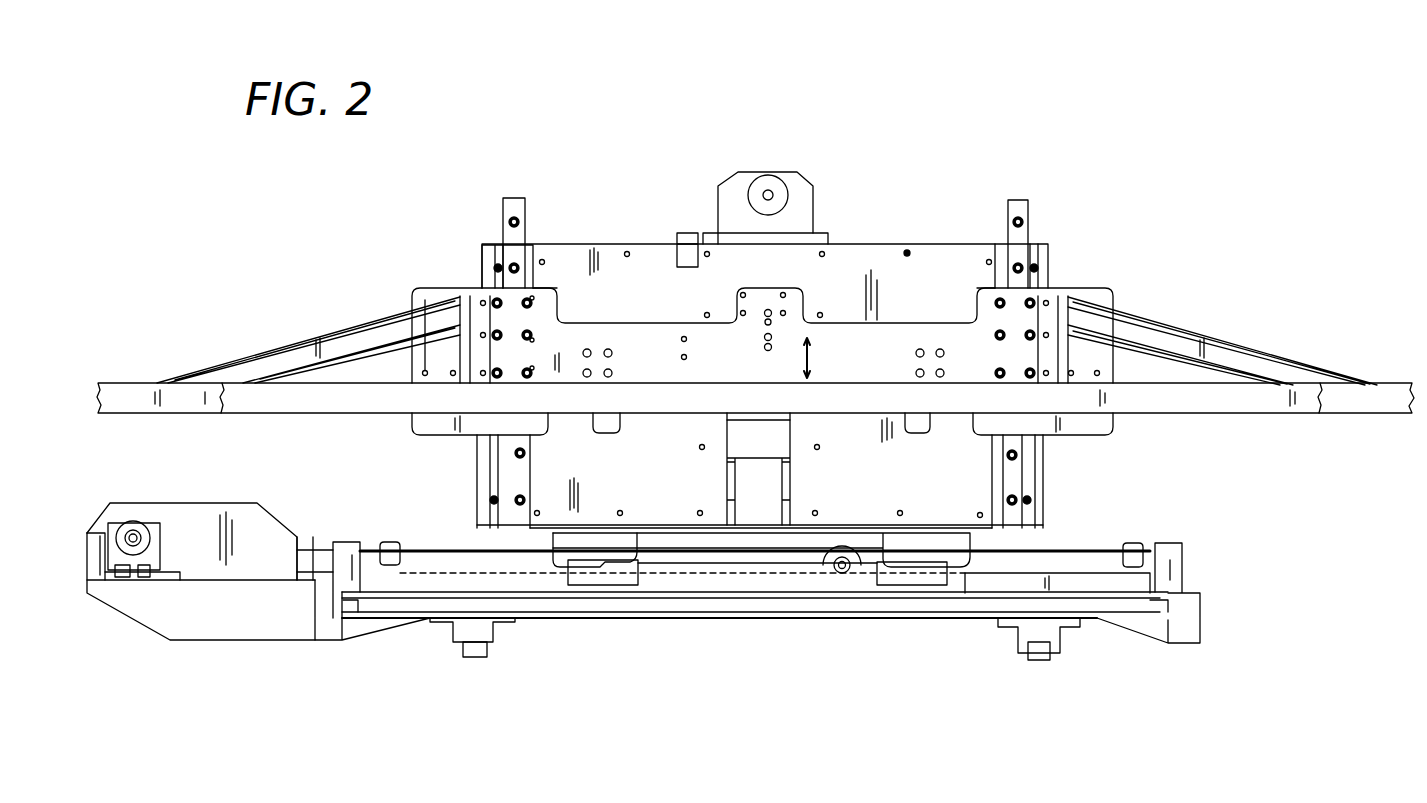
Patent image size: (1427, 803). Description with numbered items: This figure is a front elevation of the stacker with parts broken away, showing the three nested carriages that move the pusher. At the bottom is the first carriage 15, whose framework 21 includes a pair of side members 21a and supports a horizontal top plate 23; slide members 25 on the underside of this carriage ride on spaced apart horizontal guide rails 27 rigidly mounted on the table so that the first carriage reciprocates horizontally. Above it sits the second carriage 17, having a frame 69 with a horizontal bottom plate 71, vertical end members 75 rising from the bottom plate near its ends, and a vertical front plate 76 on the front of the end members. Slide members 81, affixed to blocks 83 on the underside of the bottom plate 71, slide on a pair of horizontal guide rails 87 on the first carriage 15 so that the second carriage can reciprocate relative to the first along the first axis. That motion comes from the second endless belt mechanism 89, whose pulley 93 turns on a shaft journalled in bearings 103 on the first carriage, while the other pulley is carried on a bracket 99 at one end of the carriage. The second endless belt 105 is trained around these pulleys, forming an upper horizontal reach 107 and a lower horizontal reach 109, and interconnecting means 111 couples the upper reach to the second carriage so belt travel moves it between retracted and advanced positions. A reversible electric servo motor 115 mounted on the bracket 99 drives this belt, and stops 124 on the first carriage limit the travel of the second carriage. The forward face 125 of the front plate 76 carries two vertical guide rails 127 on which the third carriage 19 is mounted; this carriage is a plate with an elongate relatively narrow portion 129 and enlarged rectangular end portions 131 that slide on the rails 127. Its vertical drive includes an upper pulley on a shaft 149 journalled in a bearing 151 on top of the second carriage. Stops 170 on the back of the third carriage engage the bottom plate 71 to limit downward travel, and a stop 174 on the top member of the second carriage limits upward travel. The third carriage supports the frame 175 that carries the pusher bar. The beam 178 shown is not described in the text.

The first carriage 15 is at (776, 617).
The second carriage 17 is at (1048, 247).
The third carriage 19 is at (1116, 289).
The framework 21 is at (805, 618).
The side member 21a is at (330, 630).
The horizontal top plate 23 is at (1065, 590).
The slide member 25 is at (455, 642).
The horizontal guide rail 27 is at (475, 658).
The frame 69 is at (483, 248).
The horizontal bottom plate 71 is at (870, 520).
The vertical end member 75 is at (500, 482).
The vertical front plate 76 is at (905, 244).
The slide member 81 is at (605, 587).
The block 83 is at (955, 570).
The horizontal guide rail 87 is at (1040, 585).
The second endless belt mechanism 89 is at (702, 550).
The second pulley 93 is at (850, 575).
The bracket 99 is at (130, 625).
The bearings 103 is at (842, 548).
The second endless belt 105 is at (308, 549).
The upper horizontal reach 107 is at (325, 548).
The lower horizontal reach 109 is at (313, 590).
The interconnecting means 111 is at (615, 565).
The second reversible electric servo motor 115 is at (150, 530).
The stop 124 is at (385, 542).
The forward face 125 is at (962, 252).
The guide rail 127 is at (515, 198).
The elongate relatively narrow portion 129 is at (605, 325).
The enlarged rectangular end portion 131 is at (413, 362).
The shaft 149 is at (769, 194).
The bearing 151 is at (797, 204).
The stop 170 is at (615, 433).
The stop 174 is at (677, 262).
The frame 175 is at (322, 332).
The beam 178 is at (1392, 413).